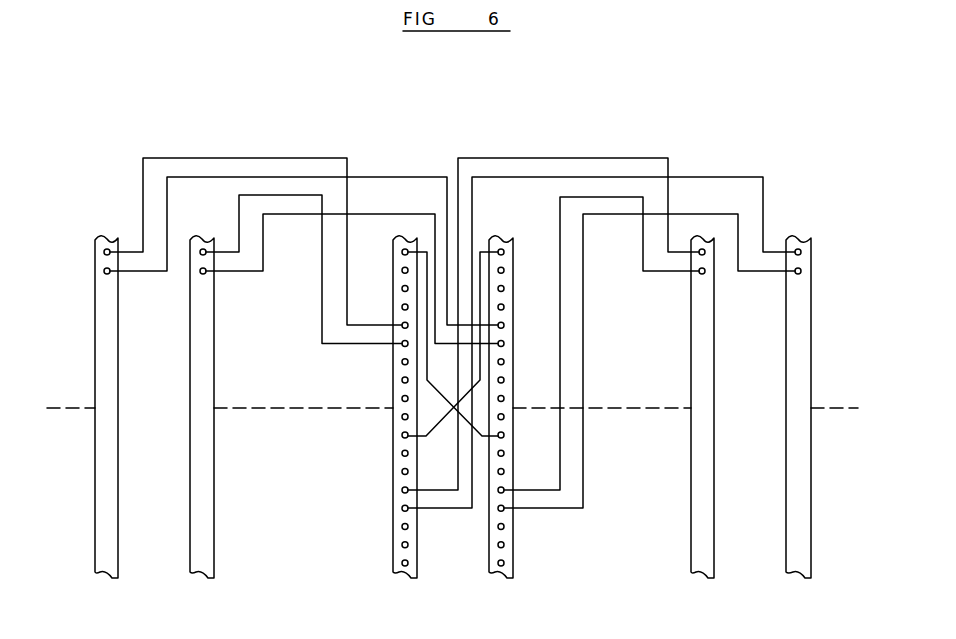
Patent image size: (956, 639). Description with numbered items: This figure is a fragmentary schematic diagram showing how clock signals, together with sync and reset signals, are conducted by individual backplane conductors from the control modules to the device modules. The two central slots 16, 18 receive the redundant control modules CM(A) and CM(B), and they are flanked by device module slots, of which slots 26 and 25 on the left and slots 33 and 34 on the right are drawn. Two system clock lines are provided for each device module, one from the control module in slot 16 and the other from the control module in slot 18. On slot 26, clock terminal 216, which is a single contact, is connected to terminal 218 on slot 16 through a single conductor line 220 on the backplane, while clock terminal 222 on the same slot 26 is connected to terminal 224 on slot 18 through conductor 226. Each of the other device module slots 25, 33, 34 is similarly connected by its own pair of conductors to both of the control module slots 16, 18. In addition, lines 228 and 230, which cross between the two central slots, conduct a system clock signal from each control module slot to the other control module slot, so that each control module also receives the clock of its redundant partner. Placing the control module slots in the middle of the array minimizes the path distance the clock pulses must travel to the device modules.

The slot 16 is at (375, 424).
The slot 18 is at (505, 424).
The slot 25 is at (204, 577).
The slot 26 is at (82, 422).
The slot 33 is at (704, 577).
The slot 34 is at (799, 577).
The clock terminal 216 is at (104, 251).
The terminal 218 is at (403, 323).
The conductor line 220 is at (168, 155).
The clock terminal 222 is at (104, 270).
The terminal 224 is at (506, 325).
The conductor 226 is at (243, 172).
The line 228 is at (410, 435).
The line 230 is at (496, 435).